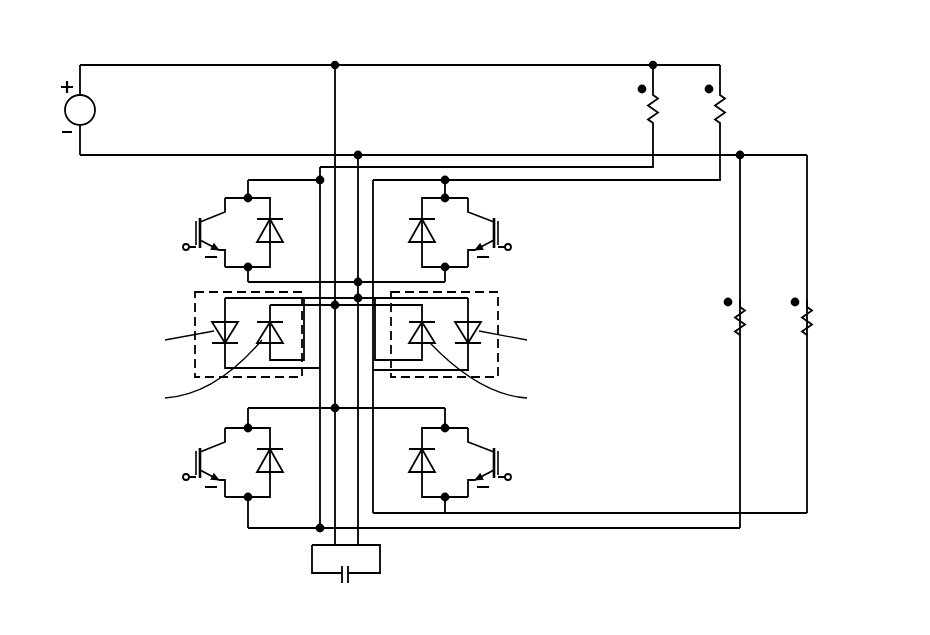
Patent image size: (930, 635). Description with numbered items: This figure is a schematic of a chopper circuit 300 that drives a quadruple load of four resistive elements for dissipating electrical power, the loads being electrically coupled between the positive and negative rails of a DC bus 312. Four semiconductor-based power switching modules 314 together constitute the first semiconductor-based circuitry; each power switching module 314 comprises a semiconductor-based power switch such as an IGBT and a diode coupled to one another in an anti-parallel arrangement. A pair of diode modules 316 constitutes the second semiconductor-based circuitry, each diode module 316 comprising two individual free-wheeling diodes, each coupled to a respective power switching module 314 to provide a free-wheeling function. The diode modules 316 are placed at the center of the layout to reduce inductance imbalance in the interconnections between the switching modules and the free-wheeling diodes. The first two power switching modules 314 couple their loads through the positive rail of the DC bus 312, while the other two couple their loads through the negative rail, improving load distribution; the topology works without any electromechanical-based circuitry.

The chopper circuit 300 is at (572, 34).
The DC bus 312 is at (402, 56).
The semiconductor-based power switching module 314 is at (540, 430).
The diode module 316 is at (527, 302).